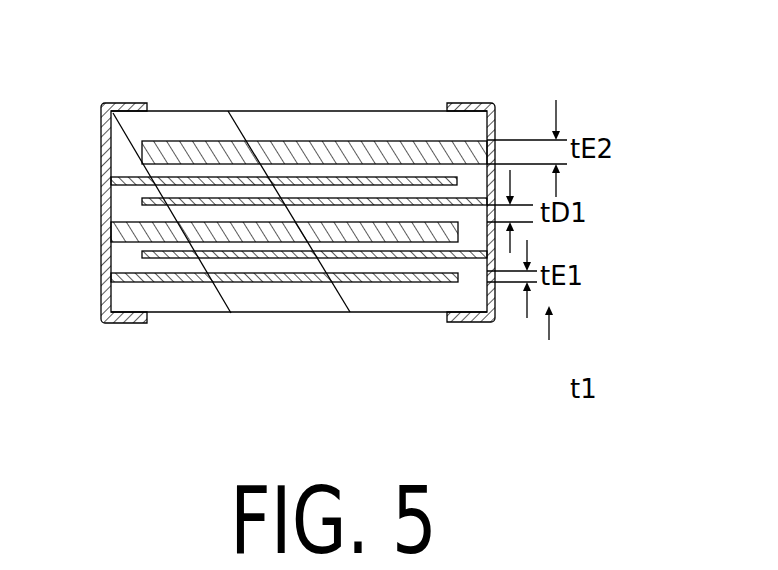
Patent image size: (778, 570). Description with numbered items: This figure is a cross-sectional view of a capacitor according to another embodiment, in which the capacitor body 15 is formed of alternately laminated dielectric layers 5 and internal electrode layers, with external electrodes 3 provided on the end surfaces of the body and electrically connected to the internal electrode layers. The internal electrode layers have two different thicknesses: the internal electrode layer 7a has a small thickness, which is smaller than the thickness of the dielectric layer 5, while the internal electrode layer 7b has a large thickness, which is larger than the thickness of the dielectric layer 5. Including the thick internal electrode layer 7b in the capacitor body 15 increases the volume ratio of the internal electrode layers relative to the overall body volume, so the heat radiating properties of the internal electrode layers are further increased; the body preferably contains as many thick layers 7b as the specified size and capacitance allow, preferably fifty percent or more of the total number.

The external electrode 3 is at (102, 118).
The dielectric layer 5 is at (306, 221).
The internal electrode layer having a small thickness 7a is at (299, 289).
The internal electrode layer having a large thickness 7b is at (299, 234).
The laminate body 15 is at (415, 118).